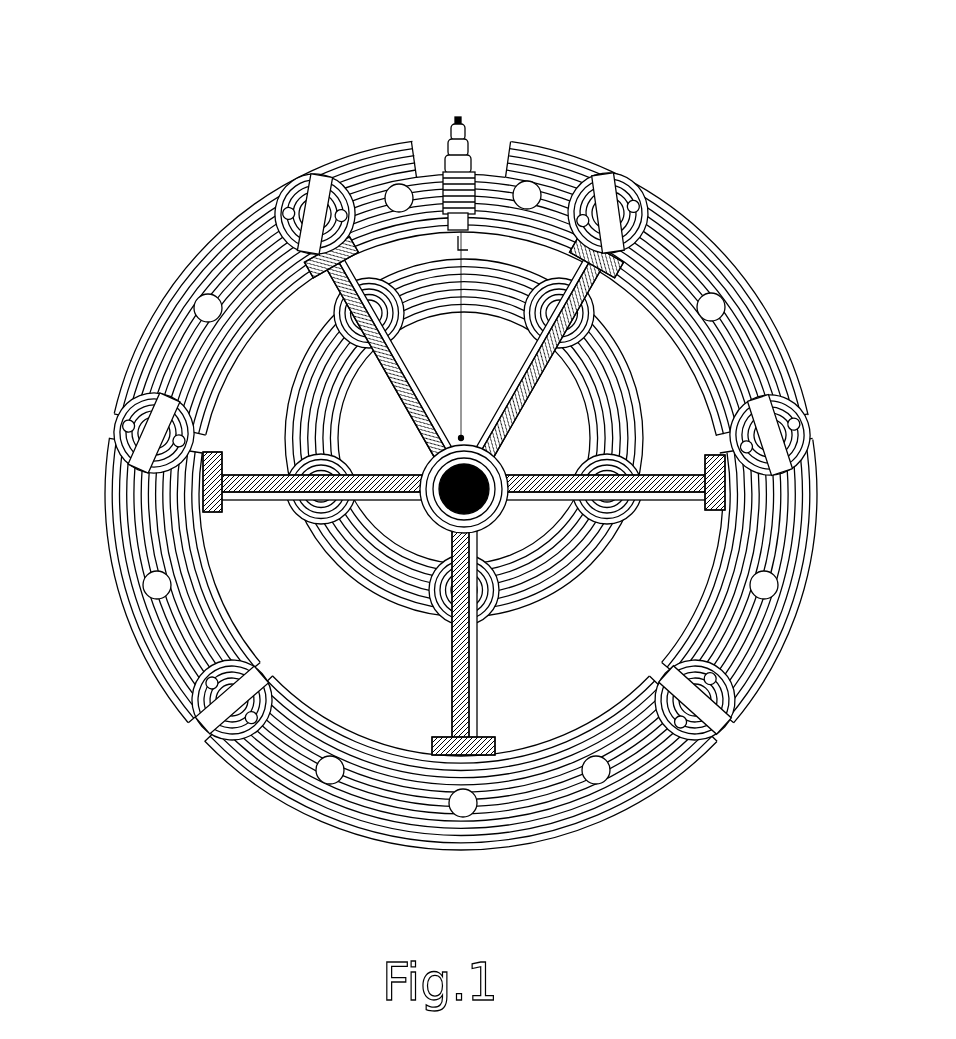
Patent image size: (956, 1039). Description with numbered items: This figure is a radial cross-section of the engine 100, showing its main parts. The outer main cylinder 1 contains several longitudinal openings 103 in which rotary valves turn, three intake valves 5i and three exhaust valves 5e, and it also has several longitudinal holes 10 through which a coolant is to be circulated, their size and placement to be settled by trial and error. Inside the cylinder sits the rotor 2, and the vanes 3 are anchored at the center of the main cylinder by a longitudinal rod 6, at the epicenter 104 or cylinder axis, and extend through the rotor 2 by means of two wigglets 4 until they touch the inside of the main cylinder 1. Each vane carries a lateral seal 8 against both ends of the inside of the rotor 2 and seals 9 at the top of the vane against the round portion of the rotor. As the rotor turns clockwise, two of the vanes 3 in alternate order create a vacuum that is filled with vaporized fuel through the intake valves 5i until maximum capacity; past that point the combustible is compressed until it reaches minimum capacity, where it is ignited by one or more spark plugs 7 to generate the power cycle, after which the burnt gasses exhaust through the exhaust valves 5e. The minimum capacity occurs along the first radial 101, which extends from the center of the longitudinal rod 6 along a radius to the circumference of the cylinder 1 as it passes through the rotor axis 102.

The engine 100 is at (312, 78).
The main cylinder 1 is at (738, 257).
The rotor 2 is at (579, 583).
The vane 3 is at (483, 688).
The wigglet 4 is at (642, 508).
The exhaust valve 5e is at (282, 178).
The intake valve 5i is at (628, 172).
The longitudinal rod 6 is at (492, 472).
The spark plug 7 is at (480, 148).
The lateral seal 8 is at (412, 384).
The seal 9 is at (214, 456).
The longitudinal hole 10 is at (786, 586).
The first radial 101 is at (462, 384).
The rotor axis 102 is at (476, 441).
The longitudinal opening 103 is at (272, 667).
The epicenter 104 is at (478, 506).